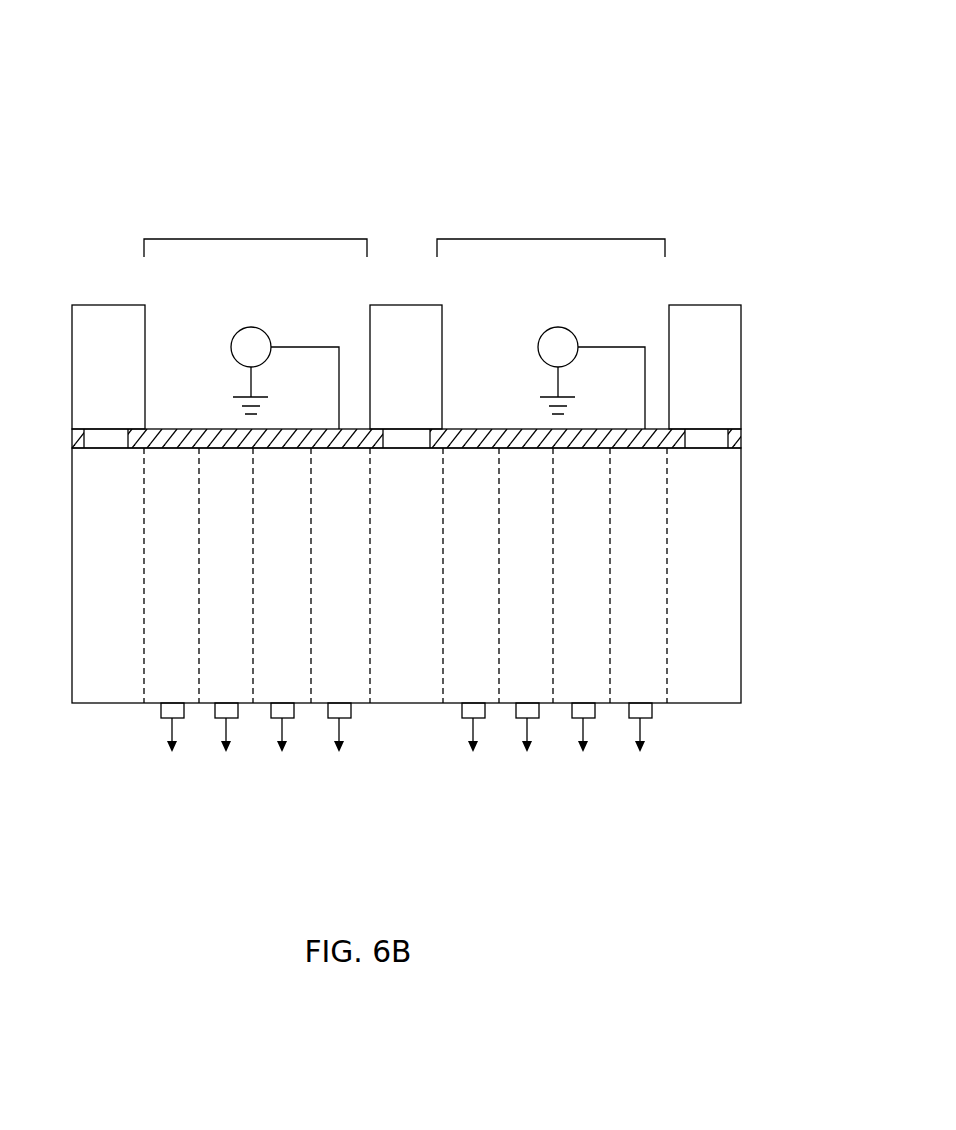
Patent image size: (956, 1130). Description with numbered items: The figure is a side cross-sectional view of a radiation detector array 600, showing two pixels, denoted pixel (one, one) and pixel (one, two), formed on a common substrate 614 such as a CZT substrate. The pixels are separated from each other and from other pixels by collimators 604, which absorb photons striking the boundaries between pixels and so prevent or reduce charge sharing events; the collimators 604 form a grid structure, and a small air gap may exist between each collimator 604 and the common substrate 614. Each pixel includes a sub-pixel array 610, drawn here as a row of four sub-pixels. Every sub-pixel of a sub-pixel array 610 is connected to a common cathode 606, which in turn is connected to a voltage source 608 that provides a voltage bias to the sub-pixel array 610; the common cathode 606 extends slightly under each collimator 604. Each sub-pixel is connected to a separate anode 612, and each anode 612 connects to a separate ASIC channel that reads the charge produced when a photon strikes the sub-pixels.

The radiation detector array 600 is at (92, 92).
The collimator 604 is at (124, 305).
The common cathode 606 is at (153, 428).
The voltage source 608 is at (253, 327).
The sub-pixel array 610 is at (144, 528).
The anode 612 is at (161, 718).
The common substrate 614 is at (741, 573).